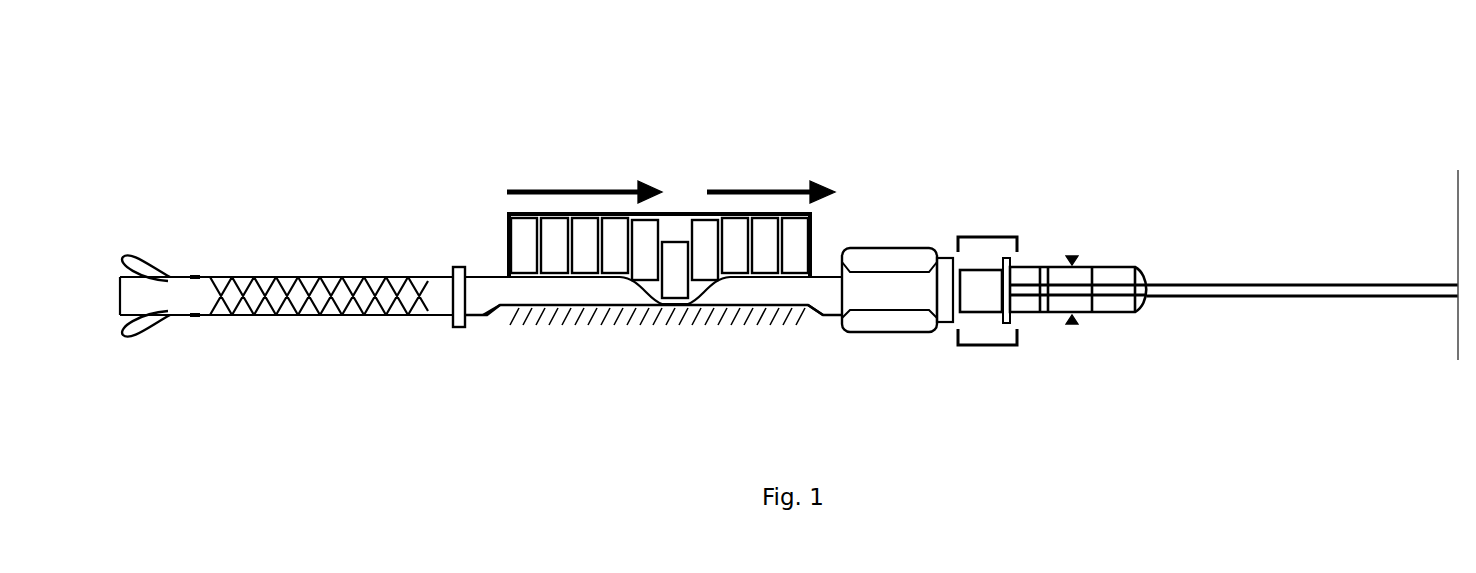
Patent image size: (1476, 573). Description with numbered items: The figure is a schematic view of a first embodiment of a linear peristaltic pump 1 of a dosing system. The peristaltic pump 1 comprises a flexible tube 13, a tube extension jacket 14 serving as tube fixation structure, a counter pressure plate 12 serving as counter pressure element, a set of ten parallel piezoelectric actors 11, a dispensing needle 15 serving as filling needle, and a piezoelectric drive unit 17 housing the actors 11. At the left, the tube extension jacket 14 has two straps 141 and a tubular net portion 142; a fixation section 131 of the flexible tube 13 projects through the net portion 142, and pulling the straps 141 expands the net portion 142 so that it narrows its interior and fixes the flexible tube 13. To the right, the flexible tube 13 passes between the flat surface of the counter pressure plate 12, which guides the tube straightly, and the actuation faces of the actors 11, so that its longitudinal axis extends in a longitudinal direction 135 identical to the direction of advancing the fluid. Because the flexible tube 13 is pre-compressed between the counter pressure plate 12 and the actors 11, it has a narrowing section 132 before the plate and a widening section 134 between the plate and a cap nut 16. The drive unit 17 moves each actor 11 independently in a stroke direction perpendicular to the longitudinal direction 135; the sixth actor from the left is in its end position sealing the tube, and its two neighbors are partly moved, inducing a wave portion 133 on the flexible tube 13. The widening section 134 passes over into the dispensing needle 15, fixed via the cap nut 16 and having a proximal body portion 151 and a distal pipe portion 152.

The linear peristaltic pump 1 is at (209, 158).
The piezoelectric actors 11 is at (582, 230).
The counter pressure plate 12 is at (567, 313).
The flexible tube 13 is at (433, 250).
The fixation section 131 is at (190, 277).
The narrowing section 132 is at (488, 317).
The wave portion 133 is at (650, 300).
The widening section 134 is at (825, 317).
The longitudinal direction 135 is at (723, 190).
The tube extension jacket 14 is at (335, 246).
The straps 141 is at (142, 253).
The tubular net portion 142 is at (275, 290).
The dispensing needle 15 is at (1150, 340).
The body portion 151 is at (1110, 278).
The pipe portion 152 is at (1318, 288).
The cap nut 16 is at (885, 305).
The piezoelectric drive unit 17 is at (812, 245).